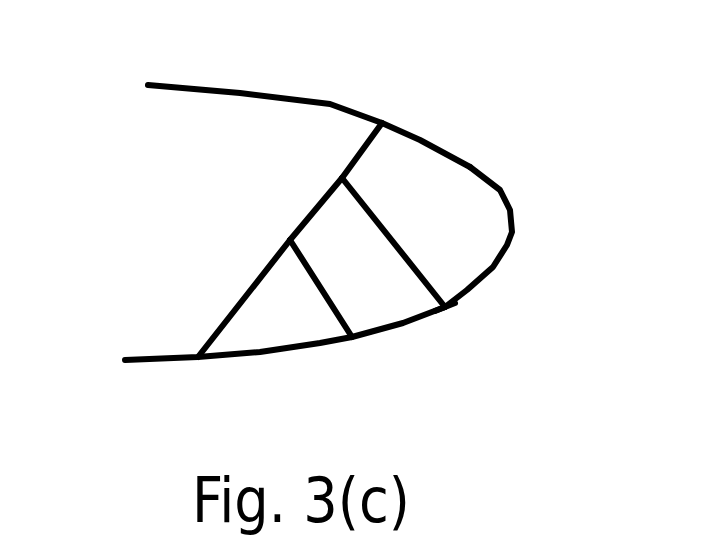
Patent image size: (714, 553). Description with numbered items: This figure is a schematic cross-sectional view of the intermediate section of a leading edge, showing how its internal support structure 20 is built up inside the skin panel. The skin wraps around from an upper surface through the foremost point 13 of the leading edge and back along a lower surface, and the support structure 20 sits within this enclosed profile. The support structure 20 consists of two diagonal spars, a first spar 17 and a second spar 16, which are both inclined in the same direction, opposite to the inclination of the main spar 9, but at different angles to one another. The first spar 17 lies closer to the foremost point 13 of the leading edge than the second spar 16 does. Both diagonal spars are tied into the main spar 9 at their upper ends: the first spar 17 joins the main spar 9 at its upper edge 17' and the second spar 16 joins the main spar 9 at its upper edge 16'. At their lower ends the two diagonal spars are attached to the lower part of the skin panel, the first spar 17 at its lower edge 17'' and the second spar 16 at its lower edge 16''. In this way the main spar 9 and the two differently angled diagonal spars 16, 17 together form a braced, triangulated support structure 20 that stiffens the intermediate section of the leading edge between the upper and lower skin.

The support structure 20 is at (247, 165).
The foremost point 13 is at (512, 210).
The main spar 9 is at (230, 298).
The second spar 16 is at (285, 357).
The upper edge of second spar 16' is at (262, 209).
The lower edge of second spar 16'' is at (359, 320).
The first spar 17 is at (470, 242).
The upper edge of first spar 17' is at (356, 102).
The lower edge of first spar 17'' is at (490, 336).